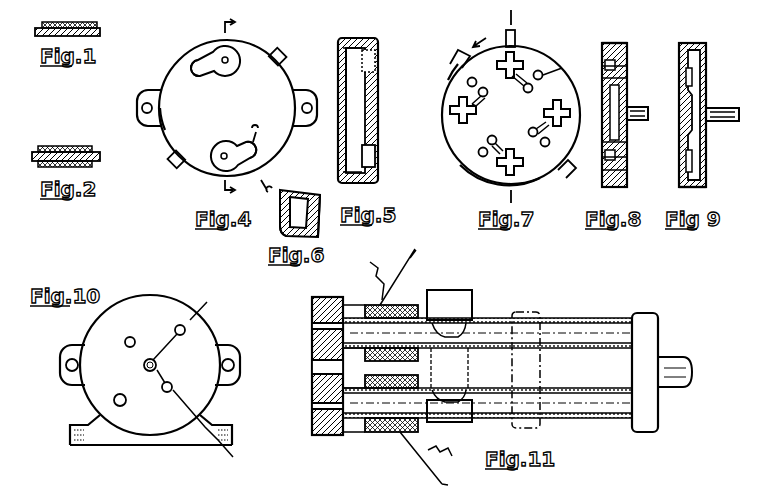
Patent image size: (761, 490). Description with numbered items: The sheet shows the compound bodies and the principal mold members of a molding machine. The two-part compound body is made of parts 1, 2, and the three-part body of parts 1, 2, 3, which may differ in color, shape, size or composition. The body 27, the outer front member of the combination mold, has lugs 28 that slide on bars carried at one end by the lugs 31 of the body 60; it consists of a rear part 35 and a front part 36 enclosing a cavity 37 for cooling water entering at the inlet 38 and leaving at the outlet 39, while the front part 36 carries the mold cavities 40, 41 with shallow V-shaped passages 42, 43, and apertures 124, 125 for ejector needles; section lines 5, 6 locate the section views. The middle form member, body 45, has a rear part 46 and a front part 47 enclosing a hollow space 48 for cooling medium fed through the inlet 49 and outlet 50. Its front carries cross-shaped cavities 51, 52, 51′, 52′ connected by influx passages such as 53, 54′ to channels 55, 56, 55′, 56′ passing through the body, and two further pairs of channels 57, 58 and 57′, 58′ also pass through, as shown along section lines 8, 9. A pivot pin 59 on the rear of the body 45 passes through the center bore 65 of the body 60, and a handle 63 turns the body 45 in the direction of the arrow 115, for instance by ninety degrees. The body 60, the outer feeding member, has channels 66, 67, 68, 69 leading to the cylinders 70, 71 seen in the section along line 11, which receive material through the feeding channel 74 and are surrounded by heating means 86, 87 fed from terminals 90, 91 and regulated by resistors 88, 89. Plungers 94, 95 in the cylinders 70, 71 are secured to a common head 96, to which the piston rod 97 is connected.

In FIG. 1, the part 1 is at (100, 32).
In FIG. 2, the part 1 is at (100, 156).
In FIG. 1, the part 2 is at (87, 22).
In FIG. 2, the part 2 is at (75, 147).
In FIG. 2, the part 3 is at (88, 165).
In FIG. 4, the section line 5— 5 is at (236, 105).
In FIG. 4, the section line 6— 6 is at (267, 156).
In FIG. 7, the section line 8— 8 is at (554, 54).
In FIG. 7, the section line 9— 9 is at (517, 106).
In FIG. 10, the section line 11— 11 is at (200, 378).
In FIG. 4, the body 27 is at (172, 134).
In FIG. 4, the lugs 28 is at (223, 101).
In FIG. 10, the lugs 31 is at (150, 356).
In FIG. 5, the rear part 35 is at (345, 128).
In FIG. 6, the rear part 35 is at (284, 233).
In FIG. 4, the front part 36 is at (279, 142).
In FIG. 5, the front part 36 is at (378, 106).
In FIG. 5, the cavity 37 is at (348, 82).
In FIG. 6, the cavity 37 is at (294, 205).
In FIG. 4, the inlet 38 is at (284, 51).
In FIG. 4, the outlet 39 is at (172, 164).
In FIG. 4, the mold cavity 40 is at (237, 74).
In FIG. 5, the mold cavity 40 is at (375, 62).
In FIG. 4, the mold cavity 41 is at (220, 143).
In FIG. 5, the mold cavity 41 is at (375, 150).
In FIG. 4, the shallow passage 42 is at (212, 75).
In FIG. 4, the shallow passage 43 is at (254, 144).
In FIG. 6, the shallow passage 43 is at (318, 210).
In FIG. 7, the body 45 is at (446, 80).
In FIG. 8, the rear part 46 is at (627, 59).
In FIG. 9, the rear part 46 is at (706, 68).
In FIG. 7, the front part 47 is at (494, 178).
In FIG. 8, the front part 47 is at (603, 50).
In FIG. 9, the front part 47 is at (682, 182).
In FIG. 9, the hollow space 48 is at (700, 100).
In FIG. 7, the inlet 49 is at (455, 58).
In FIG. 7, the outlet 50 is at (566, 180).
In FIG. 7, the mold cavity 51 is at (518, 62).
In FIG. 9, the mold cavity 51 is at (686, 82).
In FIG. 7, the mold cavity 51′ is at (561, 102).
In FIG. 8, the mold cavity 51′ is at (602, 78).
In FIG. 7, the mold cavity 52 is at (520, 167).
In FIG. 9, the mold cavity 52 is at (686, 166).
In FIG. 7, the mold cavity 52′ is at (460, 118).
In FIG. 7, the influx passage 53 is at (537, 81).
In FIG. 7, the influx passage 54′ is at (478, 101).
In FIG. 7, the channel 55 is at (533, 89).
In FIG. 7, the channel 55′ is at (530, 129).
In FIG. 7, the channel 56 is at (491, 136).
In FIG. 8, the channel 56 is at (602, 157).
In FIG. 7, the channel 56′ is at (482, 87).
In FIG. 7, the channel 57 is at (564, 65).
In FIG. 8, the channel 57 is at (602, 66).
In FIG. 7, the channel 57′ is at (550, 142).
In FIG. 8, the channel 57′ is at (602, 142).
In FIG. 7, the channel 58 is at (478, 153).
In FIG. 8, the channel 58 is at (603, 171).
In FIG. 7, the channel 58′ is at (467, 84).
In FIG. 8, the pivot pin 59 is at (636, 120).
In FIG. 9, the pivot pin 59 is at (726, 121).
In FIG. 10, the body 60 is at (163, 304).
In FIG. 11, the body 60 is at (312, 428).
In FIG. 7, the handle 63 is at (516, 42).
In FIG. 10, the center bore 65 is at (157, 365).
In FIG. 11, the center bore 65 is at (312, 363).
In FIG. 10, the channel 66 is at (125, 341).
In FIG. 10, the channel 67 is at (184, 333).
In FIG. 11, the channel 67 is at (312, 325).
In FIG. 10, the channel 68 is at (172, 387).
In FIG. 11, the channel 68 is at (312, 406).
In FIG. 10, the channel 69 is at (115, 398).
In FIG. 11, the cylinder 70 is at (442, 325).
In FIG. 11, the cylinder 71 is at (438, 412).
In FIG. 11, the feeding channel 74 is at (441, 291).
In FIG. 11, the heating means 86 is at (375, 305).
In FIG. 11, the heating means 87 is at (372, 432).
In FIG. 11, the resistor 88 is at (368, 277).
In FIG. 11, the resistor 89 is at (448, 450).
In FIG. 11, the terminal 90 is at (407, 271).
In FIG. 11, the terminal 91 is at (433, 461).
In FIG. 11, the plunger 94 is at (560, 319).
In FIG. 11, the plunger 95 is at (560, 419).
In FIG. 11, the head 96 is at (645, 313).
In FIG. 11, the piston rod 97 is at (672, 357).
In FIG. 7, the arrow 115 is at (482, 34).
In FIG. 4, the aperture 124 is at (228, 62).
In FIG. 5, the aperture 124 is at (343, 55).
In FIG. 4, the aperture 125 is at (221, 156).
In FIG. 5, the aperture 125 is at (342, 166).